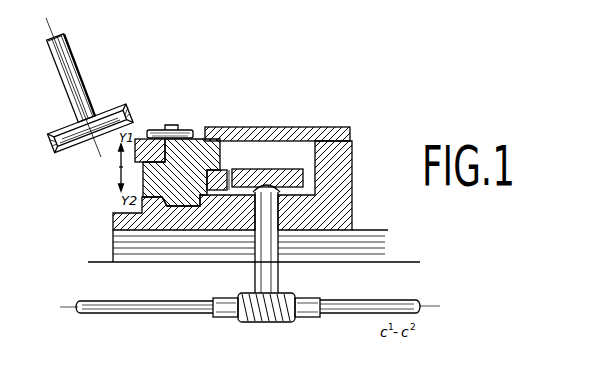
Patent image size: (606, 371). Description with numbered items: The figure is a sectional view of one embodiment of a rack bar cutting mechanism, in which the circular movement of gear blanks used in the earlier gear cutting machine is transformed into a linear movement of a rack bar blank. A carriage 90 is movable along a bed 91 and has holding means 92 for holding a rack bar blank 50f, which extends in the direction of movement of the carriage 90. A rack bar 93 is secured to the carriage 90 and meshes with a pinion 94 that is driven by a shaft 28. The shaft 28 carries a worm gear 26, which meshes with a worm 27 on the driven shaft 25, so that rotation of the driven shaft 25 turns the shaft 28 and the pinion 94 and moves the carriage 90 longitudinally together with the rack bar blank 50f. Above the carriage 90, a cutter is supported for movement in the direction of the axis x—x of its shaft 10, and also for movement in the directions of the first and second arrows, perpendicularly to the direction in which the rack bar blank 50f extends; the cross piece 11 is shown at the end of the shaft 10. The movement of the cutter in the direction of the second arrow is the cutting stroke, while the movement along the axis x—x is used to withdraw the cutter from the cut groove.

The shaft 10 is at (80, 61).
The handle cross piece 11 is at (117, 109).
The rack bar blank 50f is at (145, 128).
The carriage 90 is at (228, 129).
The bed 91 is at (349, 204).
The holding means 92 is at (204, 127).
The rack bar 93 is at (229, 172).
The pinion 94 is at (285, 171).
The driven shaft 25 is at (166, 301).
The worm gear 26 is at (255, 319).
The worm 27 is at (314, 298).
The shaft 28 is at (262, 277).